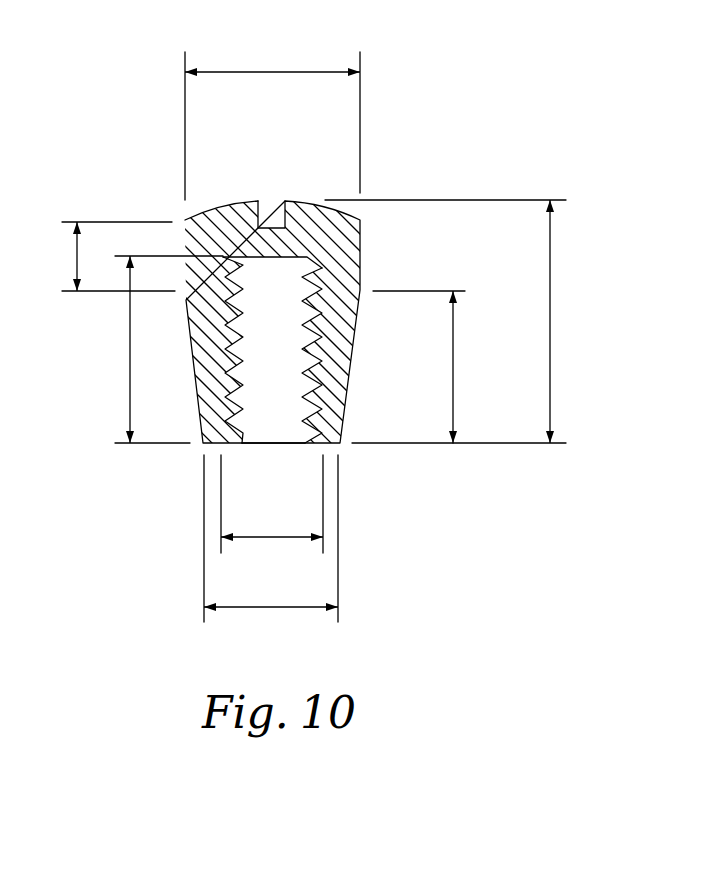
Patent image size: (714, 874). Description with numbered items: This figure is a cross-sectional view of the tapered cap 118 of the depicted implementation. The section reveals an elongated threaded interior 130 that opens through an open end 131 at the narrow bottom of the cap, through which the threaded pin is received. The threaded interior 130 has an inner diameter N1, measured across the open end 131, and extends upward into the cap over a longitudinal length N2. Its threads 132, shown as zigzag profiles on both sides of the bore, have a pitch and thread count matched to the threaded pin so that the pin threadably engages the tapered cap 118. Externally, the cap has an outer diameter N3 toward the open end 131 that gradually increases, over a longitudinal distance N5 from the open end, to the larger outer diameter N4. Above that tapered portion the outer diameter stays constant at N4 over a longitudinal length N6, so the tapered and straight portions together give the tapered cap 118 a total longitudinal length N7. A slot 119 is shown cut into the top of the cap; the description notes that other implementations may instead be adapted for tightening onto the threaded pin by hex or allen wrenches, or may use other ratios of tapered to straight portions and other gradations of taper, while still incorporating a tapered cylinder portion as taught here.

The tapered cap 118 is at (219, 205).
The slot 119 is at (275, 227).
The threaded interior 130 is at (258, 430).
The open end 131 is at (287, 443).
The threads 132 is at (310, 342).
The inner diameter N1 is at (252, 537).
The longitudinal length of the threaded interior N2 is at (130, 343).
The outer diameter toward the open end N3 is at (242, 608).
The outer diameter N4 is at (240, 72).
The longitudinal distance from the open end N5 is at (453, 340).
The longitudinal length of straight portion N6 is at (77, 256).
The total longitudinal length N7 is at (550, 258).